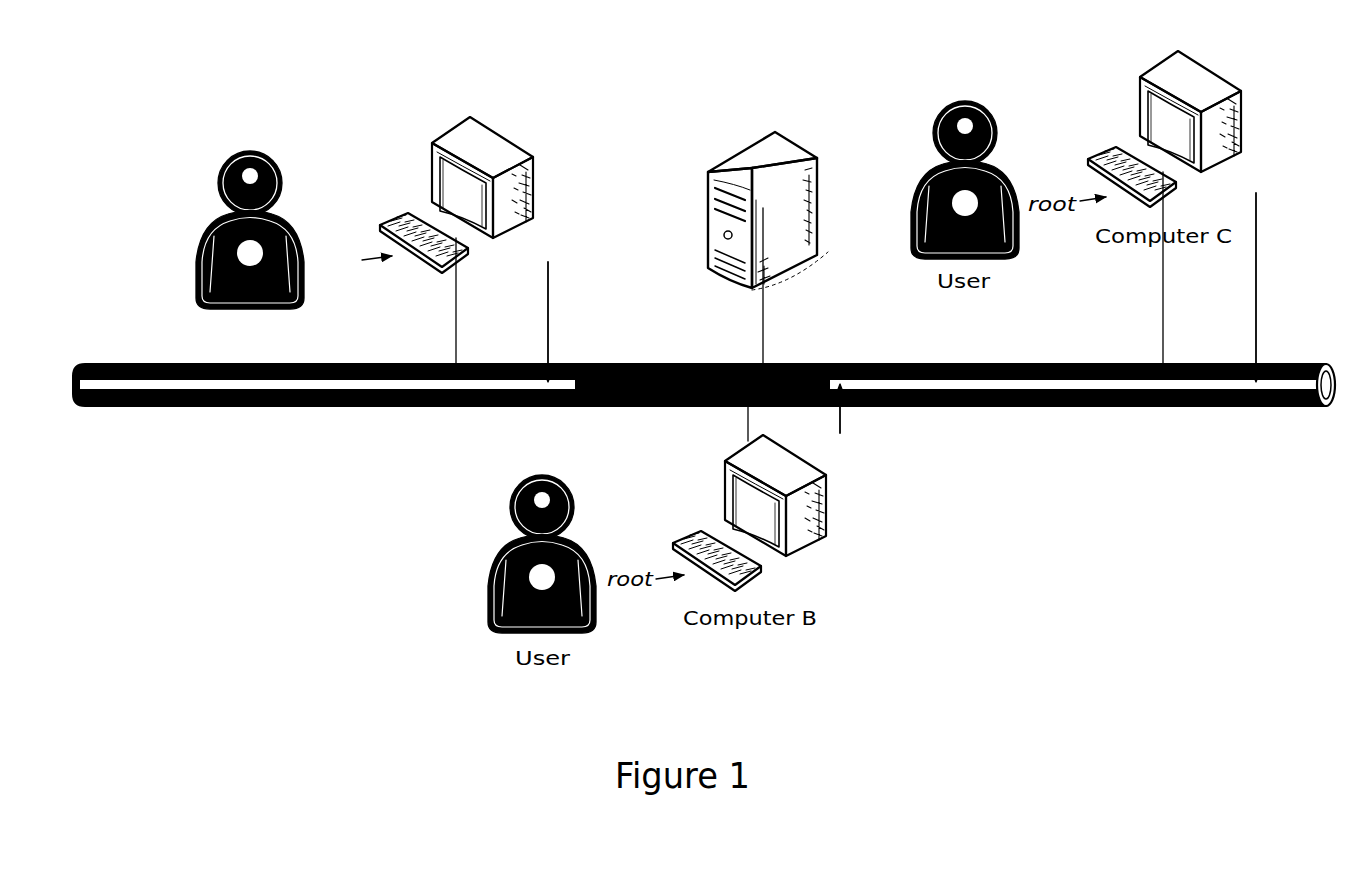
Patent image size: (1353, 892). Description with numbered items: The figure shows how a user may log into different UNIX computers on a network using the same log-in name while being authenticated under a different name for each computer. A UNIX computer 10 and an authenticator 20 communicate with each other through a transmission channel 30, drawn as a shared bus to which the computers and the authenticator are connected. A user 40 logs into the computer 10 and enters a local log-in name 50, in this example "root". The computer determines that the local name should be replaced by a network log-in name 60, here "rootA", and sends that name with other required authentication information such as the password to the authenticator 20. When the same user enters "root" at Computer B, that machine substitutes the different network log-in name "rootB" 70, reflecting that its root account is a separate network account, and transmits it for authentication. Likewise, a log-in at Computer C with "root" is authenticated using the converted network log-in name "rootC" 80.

The UNIX computer 10 is at (432, 157).
The authenticator 20 is at (740, 167).
The transmission channel 30 is at (360, 380).
The user 40 is at (240, 178).
The local log-in name 50 is at (340, 243).
The network log-in name 60 is at (555, 225).
The network log-in name "rootB" 70 is at (863, 465).
The network log-in name "rootC" 80 is at (1263, 162).